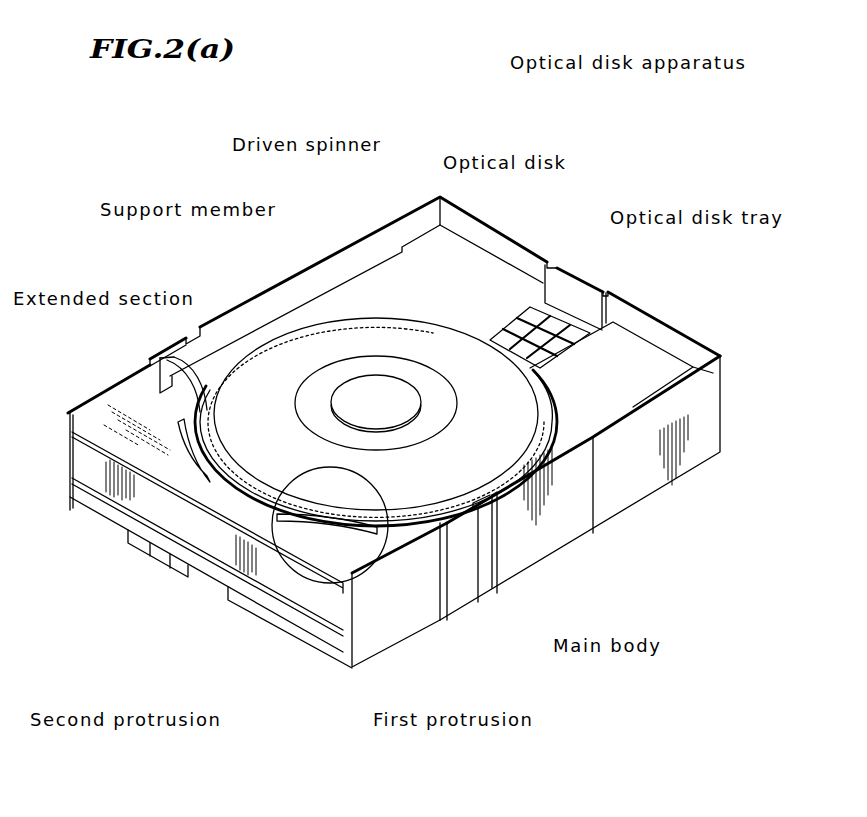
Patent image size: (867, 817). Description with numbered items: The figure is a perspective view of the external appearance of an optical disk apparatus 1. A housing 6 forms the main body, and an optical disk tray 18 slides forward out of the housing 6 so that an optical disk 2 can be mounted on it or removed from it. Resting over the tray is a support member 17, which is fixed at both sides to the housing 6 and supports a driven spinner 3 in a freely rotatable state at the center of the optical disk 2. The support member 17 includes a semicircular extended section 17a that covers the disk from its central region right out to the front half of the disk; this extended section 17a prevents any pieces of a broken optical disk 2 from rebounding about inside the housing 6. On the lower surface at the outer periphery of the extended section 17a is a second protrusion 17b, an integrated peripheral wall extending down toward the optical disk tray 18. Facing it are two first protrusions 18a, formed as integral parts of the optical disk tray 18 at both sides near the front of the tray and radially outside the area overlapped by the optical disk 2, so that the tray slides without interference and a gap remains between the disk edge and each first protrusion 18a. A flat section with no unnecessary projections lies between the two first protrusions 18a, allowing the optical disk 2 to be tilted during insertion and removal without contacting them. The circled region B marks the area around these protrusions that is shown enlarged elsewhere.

The optical disk apparatus 1 is at (604, 158).
The optical disk 2 is at (445, 357).
The driven spinner 3 is at (352, 390).
The housing 6 is at (532, 563).
The support member 17 is at (238, 333).
The extended section 17a is at (205, 438).
The second protrusion 17b is at (253, 487).
The optical disk tray 18 is at (613, 393).
The first protrusion 18a is at (182, 458).
The section B is at (310, 580).